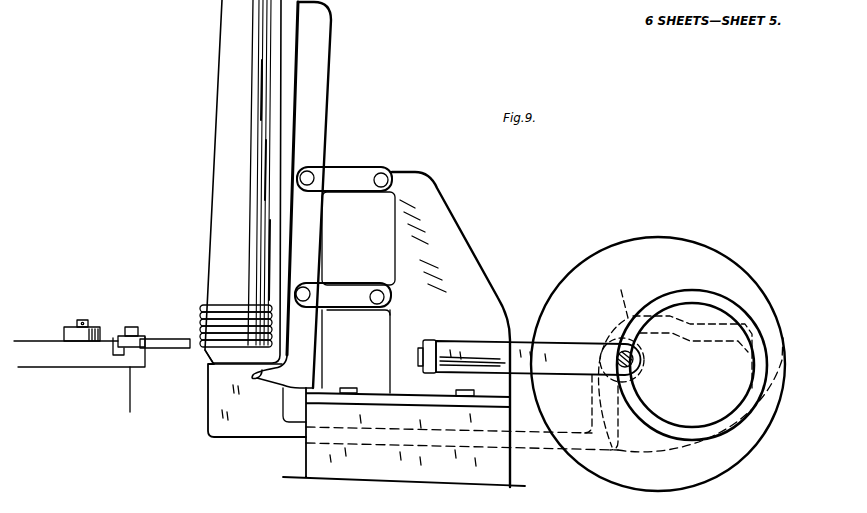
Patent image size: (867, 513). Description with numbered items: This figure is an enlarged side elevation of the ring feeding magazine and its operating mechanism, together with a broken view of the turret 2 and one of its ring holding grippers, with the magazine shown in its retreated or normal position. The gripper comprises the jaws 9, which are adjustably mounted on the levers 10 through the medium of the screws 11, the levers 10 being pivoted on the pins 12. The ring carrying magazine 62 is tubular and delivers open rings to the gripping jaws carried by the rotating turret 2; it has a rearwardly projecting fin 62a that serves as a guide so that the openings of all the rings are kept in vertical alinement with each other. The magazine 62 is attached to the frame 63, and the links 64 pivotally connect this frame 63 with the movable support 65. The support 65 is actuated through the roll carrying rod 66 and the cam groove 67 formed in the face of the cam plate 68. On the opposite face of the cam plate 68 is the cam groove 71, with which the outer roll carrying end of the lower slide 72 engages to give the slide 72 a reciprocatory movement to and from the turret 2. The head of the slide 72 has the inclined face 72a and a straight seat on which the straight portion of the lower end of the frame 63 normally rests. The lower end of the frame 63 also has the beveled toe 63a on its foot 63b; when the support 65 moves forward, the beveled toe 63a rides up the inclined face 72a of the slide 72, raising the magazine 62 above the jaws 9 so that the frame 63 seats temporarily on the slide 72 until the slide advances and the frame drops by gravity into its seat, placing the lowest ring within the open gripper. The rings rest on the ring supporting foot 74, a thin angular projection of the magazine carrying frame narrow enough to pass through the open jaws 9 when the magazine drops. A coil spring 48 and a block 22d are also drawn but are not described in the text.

The turret 2 is at (137, 398).
The jaws 9 is at (178, 349).
The levers 10 is at (79, 352).
The screws 11 is at (135, 334).
The pins 12 is at (90, 326).
The frame block 22d is at (249, 386).
The spring 48 is at (200, 322).
The ring carrying magazine 62 is at (228, 98).
The rearwardly projecting fin 62a is at (276, 42).
The frame 63 is at (326, 121).
The beveled toe 63a is at (251, 373).
The foot 63b is at (283, 380).
The links 64 is at (352, 161).
The movable support 65 is at (452, 229).
The roll carrying rod 66 is at (574, 348).
The cam groove 67 is at (697, 291).
The cam plate 68 is at (596, 254).
The cam groove 71 is at (691, 365).
The lower slide 72 is at (293, 440).
The inclined face 72a is at (272, 398).
The ring supporting foot 74 is at (243, 356).